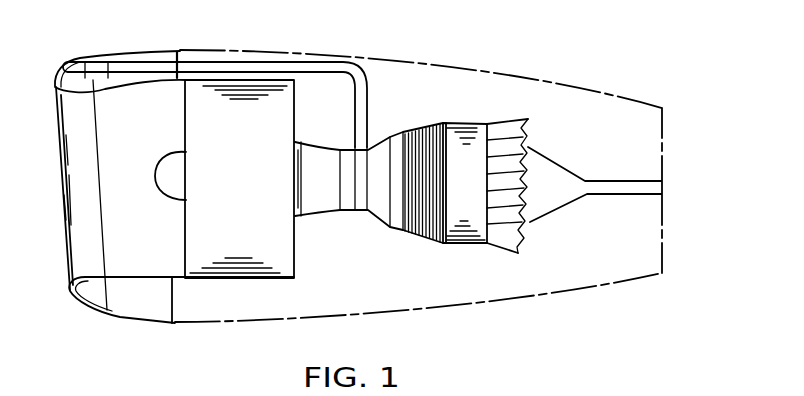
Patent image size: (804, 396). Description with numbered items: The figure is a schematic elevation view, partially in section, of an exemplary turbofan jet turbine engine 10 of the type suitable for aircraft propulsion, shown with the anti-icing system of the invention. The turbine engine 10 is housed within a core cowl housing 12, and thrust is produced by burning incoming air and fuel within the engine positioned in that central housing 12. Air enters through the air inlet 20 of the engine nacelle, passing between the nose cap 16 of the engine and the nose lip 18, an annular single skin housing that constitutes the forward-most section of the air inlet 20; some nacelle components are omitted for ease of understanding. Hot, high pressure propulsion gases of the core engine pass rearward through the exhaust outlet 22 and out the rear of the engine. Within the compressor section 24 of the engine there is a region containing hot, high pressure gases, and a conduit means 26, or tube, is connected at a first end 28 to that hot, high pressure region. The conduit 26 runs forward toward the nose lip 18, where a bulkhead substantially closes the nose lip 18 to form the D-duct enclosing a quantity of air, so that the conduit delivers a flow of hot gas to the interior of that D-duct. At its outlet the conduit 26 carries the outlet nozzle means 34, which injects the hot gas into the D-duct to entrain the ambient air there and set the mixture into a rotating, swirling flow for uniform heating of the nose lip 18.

The turbofan jet turbine engine 10 is at (360, 43).
The core cowl housing 12 is at (500, 302).
The nose cap 16 is at (170, 200).
The nose lip 18 is at (77, 302).
The air inlet 20 is at (133, 52).
The exhaust outlet 22 is at (575, 203).
The compressor section 24 is at (360, 215).
The conduit means 26 is at (228, 63).
The first end 28 is at (368, 122).
The outlet nozzle means 34 is at (82, 72).